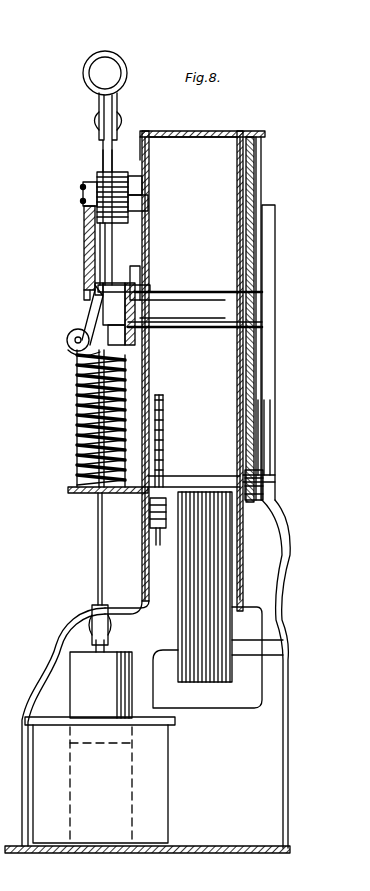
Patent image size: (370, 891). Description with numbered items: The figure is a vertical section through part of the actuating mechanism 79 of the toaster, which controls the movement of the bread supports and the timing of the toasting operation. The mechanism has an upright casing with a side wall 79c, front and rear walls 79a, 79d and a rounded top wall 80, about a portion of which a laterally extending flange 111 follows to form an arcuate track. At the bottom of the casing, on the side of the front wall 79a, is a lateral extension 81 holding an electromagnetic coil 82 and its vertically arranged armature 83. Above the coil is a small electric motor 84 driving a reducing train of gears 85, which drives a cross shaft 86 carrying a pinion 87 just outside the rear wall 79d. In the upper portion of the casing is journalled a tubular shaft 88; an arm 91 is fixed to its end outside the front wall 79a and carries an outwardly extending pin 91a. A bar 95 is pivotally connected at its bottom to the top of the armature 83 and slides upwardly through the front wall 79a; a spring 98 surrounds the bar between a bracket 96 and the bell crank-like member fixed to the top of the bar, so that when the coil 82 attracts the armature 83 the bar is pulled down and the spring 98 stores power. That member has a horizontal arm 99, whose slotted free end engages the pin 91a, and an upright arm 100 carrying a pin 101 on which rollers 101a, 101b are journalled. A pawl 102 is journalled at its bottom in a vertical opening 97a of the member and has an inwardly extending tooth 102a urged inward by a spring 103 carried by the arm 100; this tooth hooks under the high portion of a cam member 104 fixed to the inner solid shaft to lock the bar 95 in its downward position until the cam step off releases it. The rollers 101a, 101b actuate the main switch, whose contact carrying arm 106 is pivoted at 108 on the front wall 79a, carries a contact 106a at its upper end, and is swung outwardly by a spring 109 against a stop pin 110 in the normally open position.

The mechanism 79 is at (152, 124).
The front wall 79a is at (149, 233).
The side wall 79c is at (1, 471).
The rear wall 79d is at (238, 224).
The rounded top wall 80 is at (192, 132).
The laterally extending flange 111 is at (259, 131).
The contact 106a is at (110, 70).
The contact carrying arm 106 is at (98, 97).
The roller 101b is at (100, 168).
The roller 101a is at (114, 170).
The stop pin 110 is at (145, 172).
The pin 101 is at (82, 193).
The spring 109 is at (142, 194).
The pivot 108 is at (148, 205).
The spring 103 is at (84, 245).
The upright arm 100 is at (100, 242).
The pin 91a is at (120, 280).
The arm 91 is at (141, 278).
The tubular shaft 88 is at (224, 292).
The cam member 104 is at (124, 307).
The vertical opening 97a is at (95, 288).
The tooth 102a is at (100, 300).
The pawl 102 is at (92, 313).
The horizontal arm 99 is at (68, 343).
The spring 98 is at (78, 446).
The bracket 96 is at (76, 493).
The bar 95 is at (98, 544).
The reducing train of gears 85 is at (170, 453).
The pinion 87 is at (258, 470).
The cross shaft 86 is at (245, 478).
The electric motor 84 is at (225, 580).
The lateral extension 81 is at (66, 630).
The armature 83 is at (98, 688).
The electromagnetic coil 82 is at (166, 766).